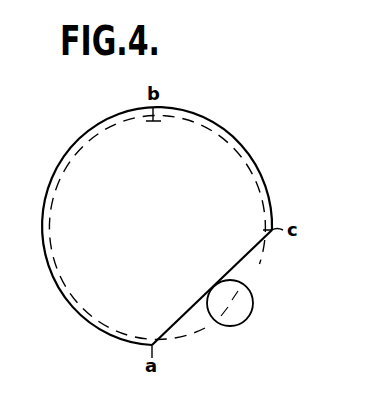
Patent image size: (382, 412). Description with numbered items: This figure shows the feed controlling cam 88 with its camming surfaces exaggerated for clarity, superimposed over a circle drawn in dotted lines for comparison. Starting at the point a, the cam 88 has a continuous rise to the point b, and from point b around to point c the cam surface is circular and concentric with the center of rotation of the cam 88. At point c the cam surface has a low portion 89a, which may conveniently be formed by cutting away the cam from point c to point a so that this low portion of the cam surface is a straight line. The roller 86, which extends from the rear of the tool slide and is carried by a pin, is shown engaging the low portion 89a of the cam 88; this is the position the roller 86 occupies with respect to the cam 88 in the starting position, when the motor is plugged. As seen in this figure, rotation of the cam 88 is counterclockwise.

The roller 86 is at (251, 311).
The cam 88 is at (84, 291).
The low portion 89a is at (236, 266).